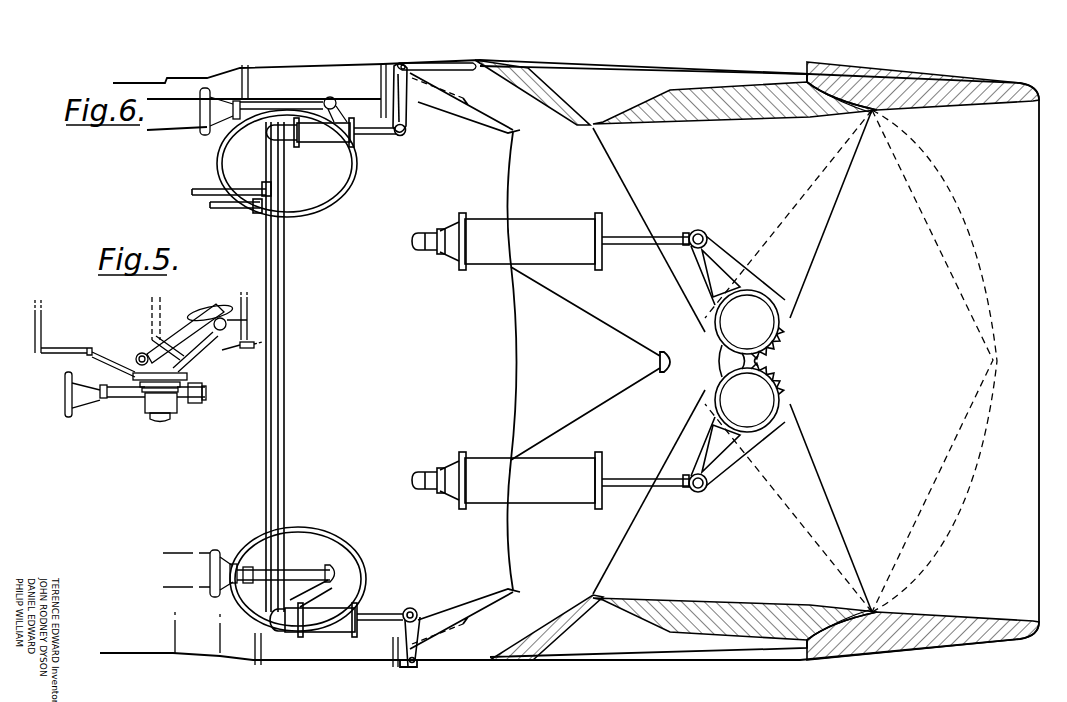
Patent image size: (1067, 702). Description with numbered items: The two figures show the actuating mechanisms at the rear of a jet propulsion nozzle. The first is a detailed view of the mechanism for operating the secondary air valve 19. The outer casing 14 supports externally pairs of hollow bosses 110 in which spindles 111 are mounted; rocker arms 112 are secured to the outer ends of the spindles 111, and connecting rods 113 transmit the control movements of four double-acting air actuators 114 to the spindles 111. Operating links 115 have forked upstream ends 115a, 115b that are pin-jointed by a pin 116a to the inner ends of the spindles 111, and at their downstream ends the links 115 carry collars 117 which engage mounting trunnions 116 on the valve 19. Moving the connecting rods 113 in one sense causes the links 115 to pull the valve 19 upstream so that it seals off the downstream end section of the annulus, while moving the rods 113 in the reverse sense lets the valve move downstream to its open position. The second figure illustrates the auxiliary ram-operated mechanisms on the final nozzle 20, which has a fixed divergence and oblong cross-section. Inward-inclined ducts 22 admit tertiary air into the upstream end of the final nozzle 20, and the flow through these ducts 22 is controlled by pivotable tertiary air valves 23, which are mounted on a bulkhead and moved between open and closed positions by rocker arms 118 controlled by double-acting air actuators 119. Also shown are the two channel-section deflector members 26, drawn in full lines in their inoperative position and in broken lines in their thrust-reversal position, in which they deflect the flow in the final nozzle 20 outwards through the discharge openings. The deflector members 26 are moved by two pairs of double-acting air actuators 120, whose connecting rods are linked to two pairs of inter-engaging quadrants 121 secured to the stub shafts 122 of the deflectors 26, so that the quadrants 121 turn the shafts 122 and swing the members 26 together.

In FIG. 5, the outer casing 14 is at (58, 350).
In FIG. 5, the secondary air valve 19 is at (175, 318).
In FIG. 6, the final nozzle 20 is at (956, 361).
In FIG. 6, the inward-inclined ducts 22 is at (539, 360).
In FIG. 6, the tertiary air valves 23 is at (465, 70).
In FIG. 6, the deflector members 26 is at (816, 361).
In FIG. 6, the hollow bosses 110 is at (291, 370).
In FIG. 5, the hollow bosses 110 is at (110, 366).
In FIG. 5, the spindles 111 is at (168, 420).
In FIG. 6, the rocker arms 112 is at (316, 589).
In FIG. 6, the connecting rods 113 is at (260, 569).
In FIG. 5, the connecting rods 113 is at (128, 398).
In FIG. 6, the double-acting air actuators 114 is at (198, 342).
In FIG. 5, the double-acting air actuators 114 is at (57, 404).
In FIG. 5, the operating links 115 is at (193, 373).
In FIG. 5, the forked upstream end 115a is at (160, 348).
In FIG. 5, the forked upstream end 115b is at (192, 368).
In FIG. 5, the mounting trunnions 116 is at (242, 333).
In FIG. 5, the pin 116a is at (137, 356).
In FIG. 5, the collars 117 is at (220, 308).
In FIG. 6, the rocker arms 118 is at (400, 92).
In FIG. 6, the double-acting air actuators 119 is at (324, 134).
In FIG. 6, the double-acting air actuators 120 is at (551, 361).
In FIG. 6, the inter-engaging quadrants 121 is at (763, 430).
In FIG. 6, the stub shafts 122 is at (730, 394).